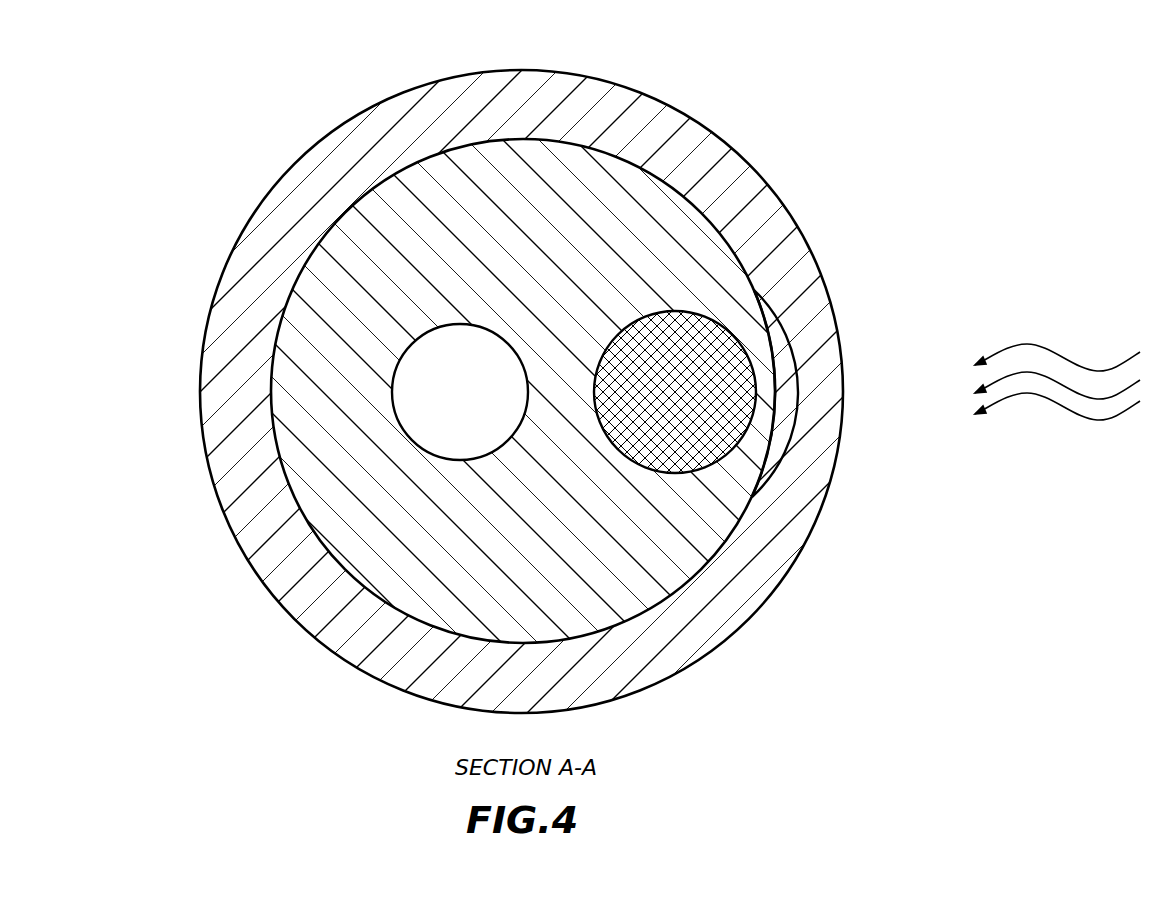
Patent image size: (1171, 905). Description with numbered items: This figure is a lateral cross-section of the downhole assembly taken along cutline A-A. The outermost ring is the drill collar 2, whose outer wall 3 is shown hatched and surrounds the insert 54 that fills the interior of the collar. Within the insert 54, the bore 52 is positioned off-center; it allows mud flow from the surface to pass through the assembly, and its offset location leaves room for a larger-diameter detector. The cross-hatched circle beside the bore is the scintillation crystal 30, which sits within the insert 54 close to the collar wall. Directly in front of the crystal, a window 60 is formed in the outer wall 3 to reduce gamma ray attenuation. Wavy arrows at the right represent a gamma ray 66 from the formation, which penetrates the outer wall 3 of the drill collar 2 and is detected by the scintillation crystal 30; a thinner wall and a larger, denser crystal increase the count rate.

The drill collar 2 is at (803, 235).
The outer wall 3 is at (727, 162).
The insert 54 is at (363, 230).
The bore 52 is at (474, 405).
The scintillation crystal 30 is at (735, 415).
The window 60 is at (780, 340).
The gamma ray 66 is at (1110, 362).